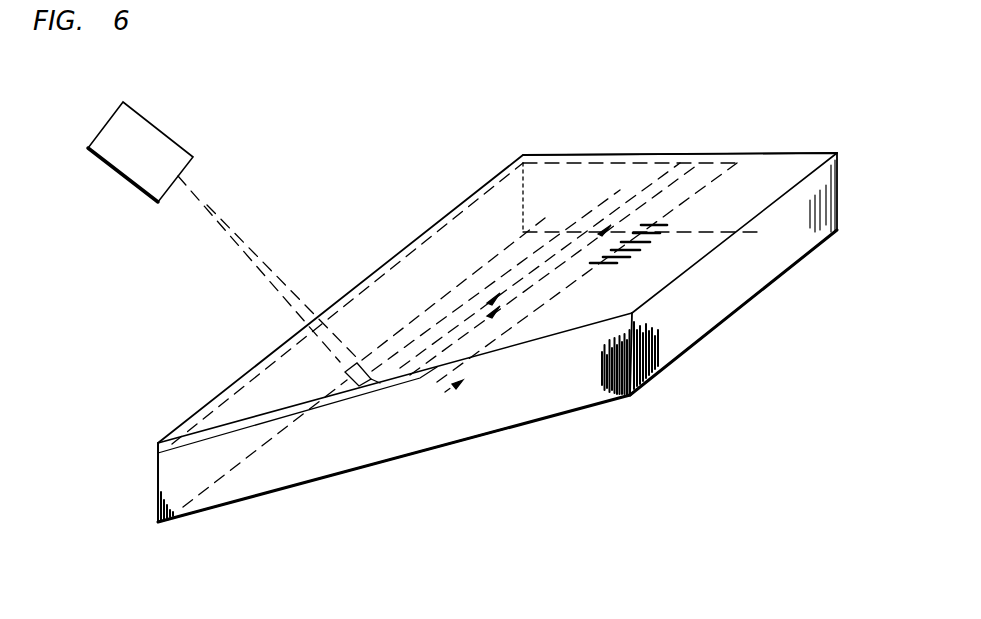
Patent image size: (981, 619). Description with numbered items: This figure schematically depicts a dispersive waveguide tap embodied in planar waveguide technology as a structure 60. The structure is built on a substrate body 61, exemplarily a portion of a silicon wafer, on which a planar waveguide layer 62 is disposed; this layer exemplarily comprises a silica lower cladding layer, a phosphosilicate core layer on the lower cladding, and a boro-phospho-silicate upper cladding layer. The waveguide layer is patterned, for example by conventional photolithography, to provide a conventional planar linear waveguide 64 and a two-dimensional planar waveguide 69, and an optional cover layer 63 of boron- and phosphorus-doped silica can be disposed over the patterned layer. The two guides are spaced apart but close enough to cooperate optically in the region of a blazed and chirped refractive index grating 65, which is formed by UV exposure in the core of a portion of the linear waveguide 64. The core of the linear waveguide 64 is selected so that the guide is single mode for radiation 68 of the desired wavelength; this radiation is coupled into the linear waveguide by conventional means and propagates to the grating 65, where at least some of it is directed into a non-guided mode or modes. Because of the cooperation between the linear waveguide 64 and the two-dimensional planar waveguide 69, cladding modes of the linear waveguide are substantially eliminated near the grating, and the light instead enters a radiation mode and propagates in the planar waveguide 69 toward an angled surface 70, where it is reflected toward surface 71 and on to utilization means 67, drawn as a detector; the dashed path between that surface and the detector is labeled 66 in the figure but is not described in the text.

The structure 60 is at (748, 142).
The substrate body 61 is at (388, 453).
The planar waveguide layer 62 is at (272, 423).
The cover layer 63 is at (330, 402).
The linear waveguide 64 is at (528, 327).
The refractive index grating 65 is at (685, 232).
The detected light beam 66 is at (283, 260).
The utilization means 67 is at (170, 135).
The radiation 68 is at (453, 382).
The two-dimensional planar waveguide 69 is at (485, 237).
The angled surface 70 is at (158, 477).
The surface 71 is at (250, 395).